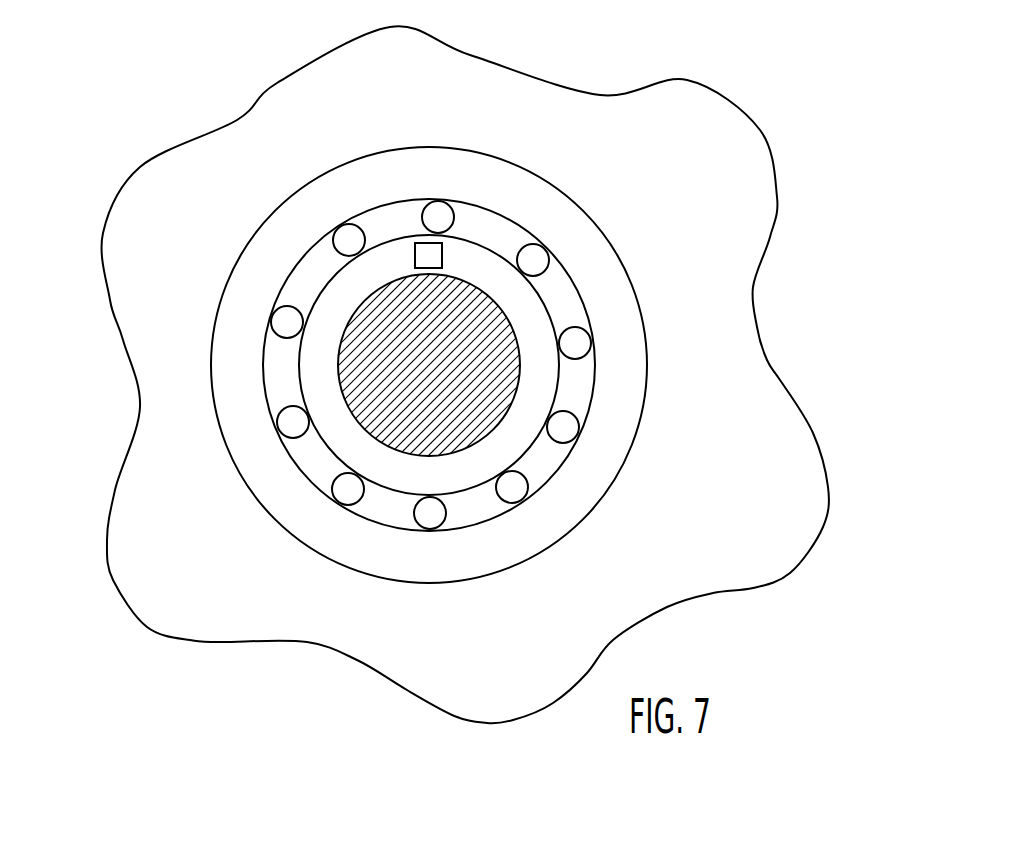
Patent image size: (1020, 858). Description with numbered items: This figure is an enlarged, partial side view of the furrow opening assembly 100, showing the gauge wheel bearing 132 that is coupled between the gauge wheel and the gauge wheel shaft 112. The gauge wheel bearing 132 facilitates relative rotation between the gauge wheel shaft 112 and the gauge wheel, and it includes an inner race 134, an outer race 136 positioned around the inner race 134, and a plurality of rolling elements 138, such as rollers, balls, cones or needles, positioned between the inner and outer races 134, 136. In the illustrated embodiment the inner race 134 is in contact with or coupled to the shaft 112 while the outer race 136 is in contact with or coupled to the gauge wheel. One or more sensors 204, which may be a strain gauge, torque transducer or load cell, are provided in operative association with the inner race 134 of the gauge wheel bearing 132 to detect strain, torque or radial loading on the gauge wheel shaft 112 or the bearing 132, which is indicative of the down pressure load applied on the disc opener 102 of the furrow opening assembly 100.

The furrow opening assembly 100 is at (135, 72).
The disc opener 102 is at (574, 151).
The gauge wheel shaft 112 is at (362, 303).
The gauge wheel bearing 132 is at (623, 262).
The inner race 134 is at (337, 433).
The outer race 136 is at (622, 375).
The rolling elements 138 is at (280, 322).
The sensor 204 is at (428, 257).